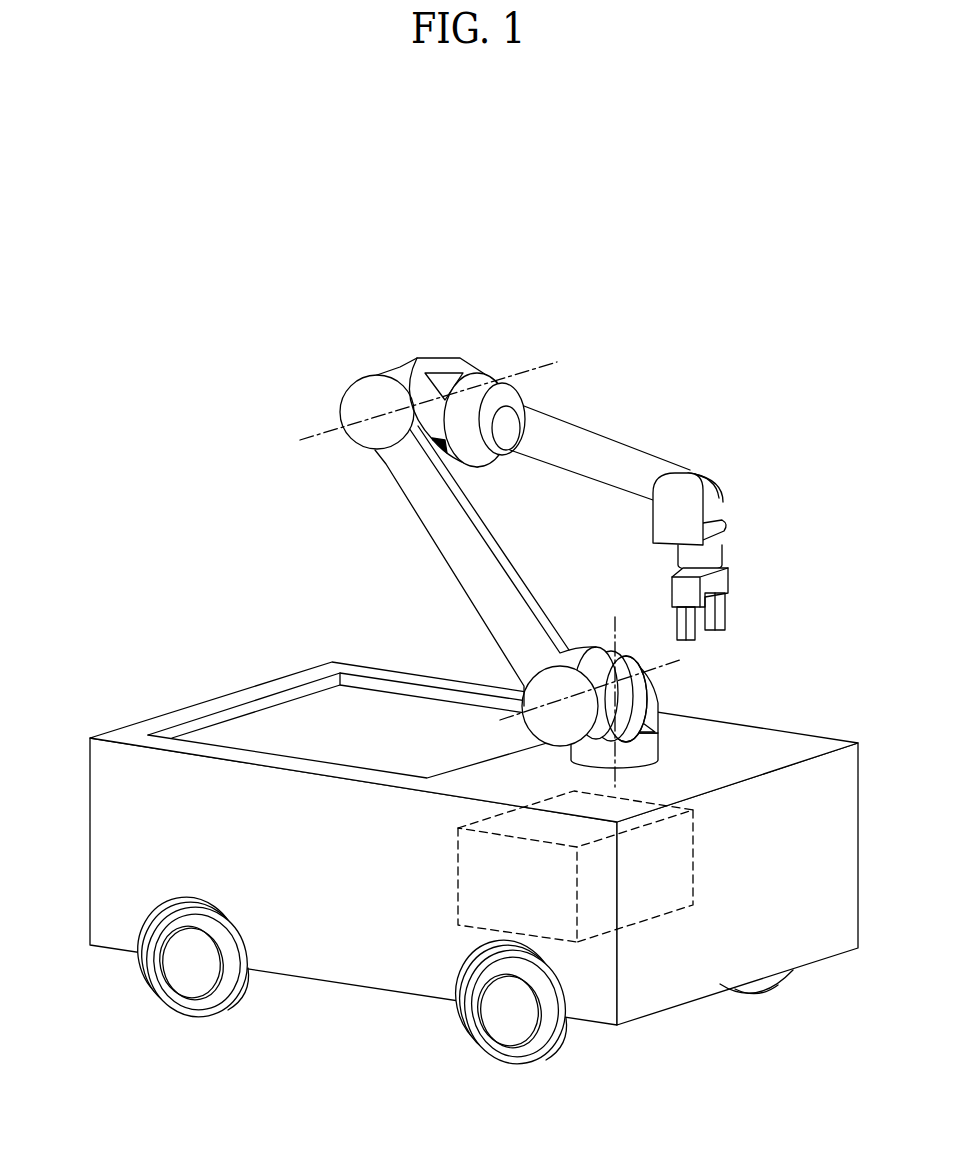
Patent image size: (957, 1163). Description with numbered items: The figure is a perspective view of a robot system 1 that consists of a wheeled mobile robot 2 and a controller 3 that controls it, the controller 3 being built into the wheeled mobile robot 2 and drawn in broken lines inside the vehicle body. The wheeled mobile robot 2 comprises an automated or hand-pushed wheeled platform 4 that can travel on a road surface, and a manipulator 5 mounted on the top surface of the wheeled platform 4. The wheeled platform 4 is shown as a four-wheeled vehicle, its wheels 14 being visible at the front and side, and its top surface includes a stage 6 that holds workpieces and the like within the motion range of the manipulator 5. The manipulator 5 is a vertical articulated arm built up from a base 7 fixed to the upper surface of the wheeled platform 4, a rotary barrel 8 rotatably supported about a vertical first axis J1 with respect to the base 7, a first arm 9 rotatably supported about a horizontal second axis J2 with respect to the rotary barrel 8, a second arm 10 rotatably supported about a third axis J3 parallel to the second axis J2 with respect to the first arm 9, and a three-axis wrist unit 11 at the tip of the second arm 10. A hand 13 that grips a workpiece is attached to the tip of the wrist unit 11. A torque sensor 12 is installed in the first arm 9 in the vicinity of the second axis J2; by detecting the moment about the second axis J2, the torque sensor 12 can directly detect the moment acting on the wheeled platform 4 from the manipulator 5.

The robot system 1 is at (108, 251).
The wheeled mobile robot 2 is at (199, 362).
The controller 3 is at (643, 910).
The wheeled platform 4 is at (147, 713).
The manipulator 5 is at (325, 383).
The stage 6 is at (278, 720).
The base 7 is at (660, 745).
The rotary barrel 8 is at (628, 670).
The first arm 9 is at (442, 542).
The second arm 10 is at (437, 365).
The wrist unit 11 is at (670, 448).
The torque sensor 12 is at (587, 645).
The hand 13 is at (730, 600).
The wheels 14 is at (190, 1003).
The first axis J1 is at (612, 776).
The second axis J2 is at (672, 668).
The third axis J3 is at (533, 357).